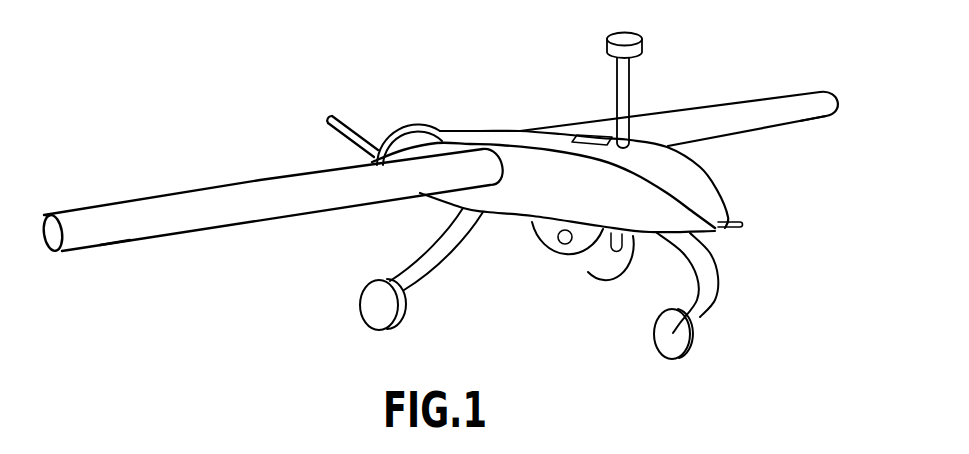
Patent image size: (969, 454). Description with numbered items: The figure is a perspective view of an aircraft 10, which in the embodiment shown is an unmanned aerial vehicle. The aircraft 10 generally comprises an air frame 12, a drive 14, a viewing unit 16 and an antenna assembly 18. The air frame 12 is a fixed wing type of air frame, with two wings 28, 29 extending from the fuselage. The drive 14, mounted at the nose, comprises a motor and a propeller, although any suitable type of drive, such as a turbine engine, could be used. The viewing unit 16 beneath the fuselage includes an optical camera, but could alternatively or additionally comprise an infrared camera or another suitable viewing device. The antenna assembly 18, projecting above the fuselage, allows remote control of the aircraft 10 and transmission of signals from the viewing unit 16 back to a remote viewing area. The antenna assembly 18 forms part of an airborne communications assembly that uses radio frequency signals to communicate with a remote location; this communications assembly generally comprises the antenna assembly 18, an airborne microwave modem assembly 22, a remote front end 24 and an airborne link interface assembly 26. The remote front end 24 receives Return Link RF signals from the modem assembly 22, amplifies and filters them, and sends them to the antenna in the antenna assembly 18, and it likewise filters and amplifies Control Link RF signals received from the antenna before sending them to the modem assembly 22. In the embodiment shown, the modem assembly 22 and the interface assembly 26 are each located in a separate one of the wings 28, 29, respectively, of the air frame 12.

The aircraft 10 is at (279, 121).
The air frame 12 is at (248, 218).
The drive 14 is at (358, 128).
The viewing unit 16 is at (578, 257).
The antenna assembly 18 is at (634, 43).
The airborne microwave modem assembly 22 is at (75, 223).
The remote front end 24 is at (592, 137).
The airborne link interface assembly 26 is at (803, 100).
The wing 28 is at (122, 242).
The wing 29 is at (821, 118).